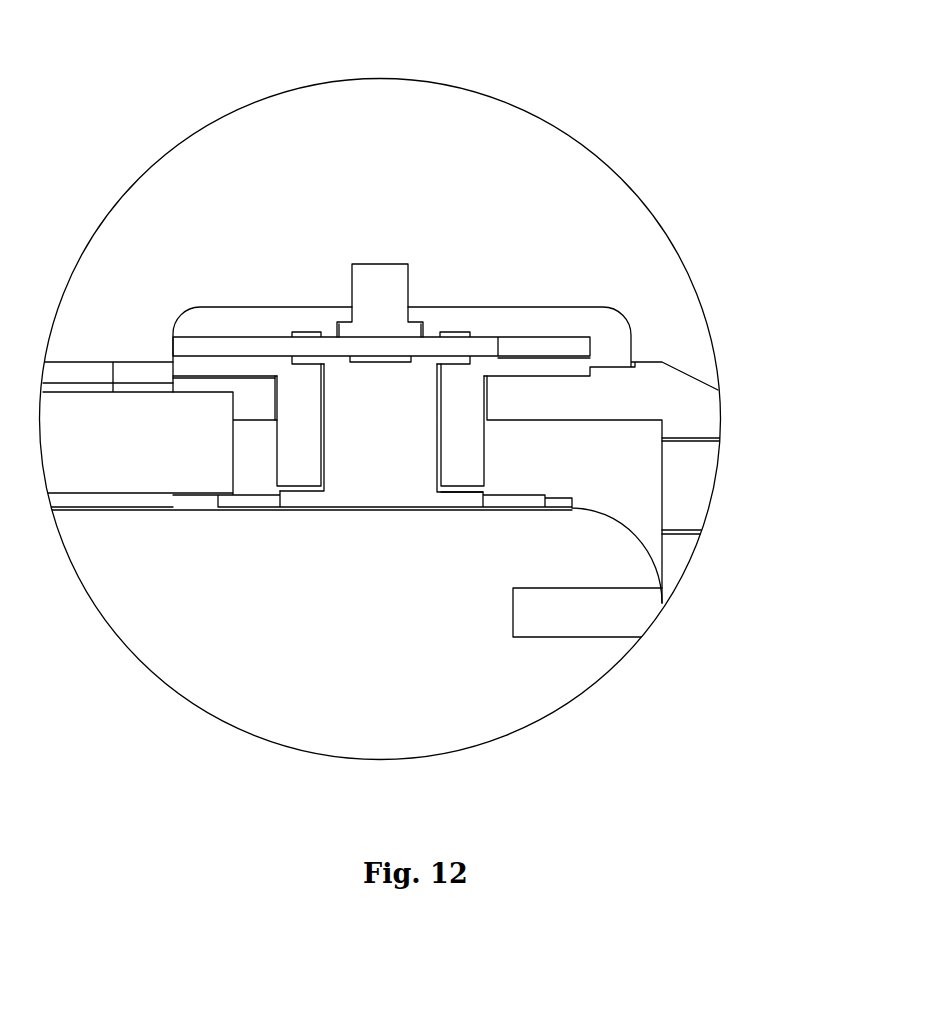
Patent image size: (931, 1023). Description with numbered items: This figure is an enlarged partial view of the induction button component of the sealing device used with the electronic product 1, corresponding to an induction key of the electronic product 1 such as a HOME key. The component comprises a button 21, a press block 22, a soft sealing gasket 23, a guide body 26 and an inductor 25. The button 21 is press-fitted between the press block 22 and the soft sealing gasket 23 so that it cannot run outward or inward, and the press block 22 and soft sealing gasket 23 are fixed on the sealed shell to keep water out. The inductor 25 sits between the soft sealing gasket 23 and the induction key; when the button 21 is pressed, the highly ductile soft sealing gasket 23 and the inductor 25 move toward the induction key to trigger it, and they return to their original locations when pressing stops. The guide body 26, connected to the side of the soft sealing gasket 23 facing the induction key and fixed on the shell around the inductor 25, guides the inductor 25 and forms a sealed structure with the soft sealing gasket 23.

The electronic product 1 is at (363, 675).
The button 21 is at (380, 292).
The press block 22 is at (283, 320).
The soft sealing gasket 23 is at (248, 348).
The inductor 25 is at (389, 453).
The guide body 26 is at (459, 433).